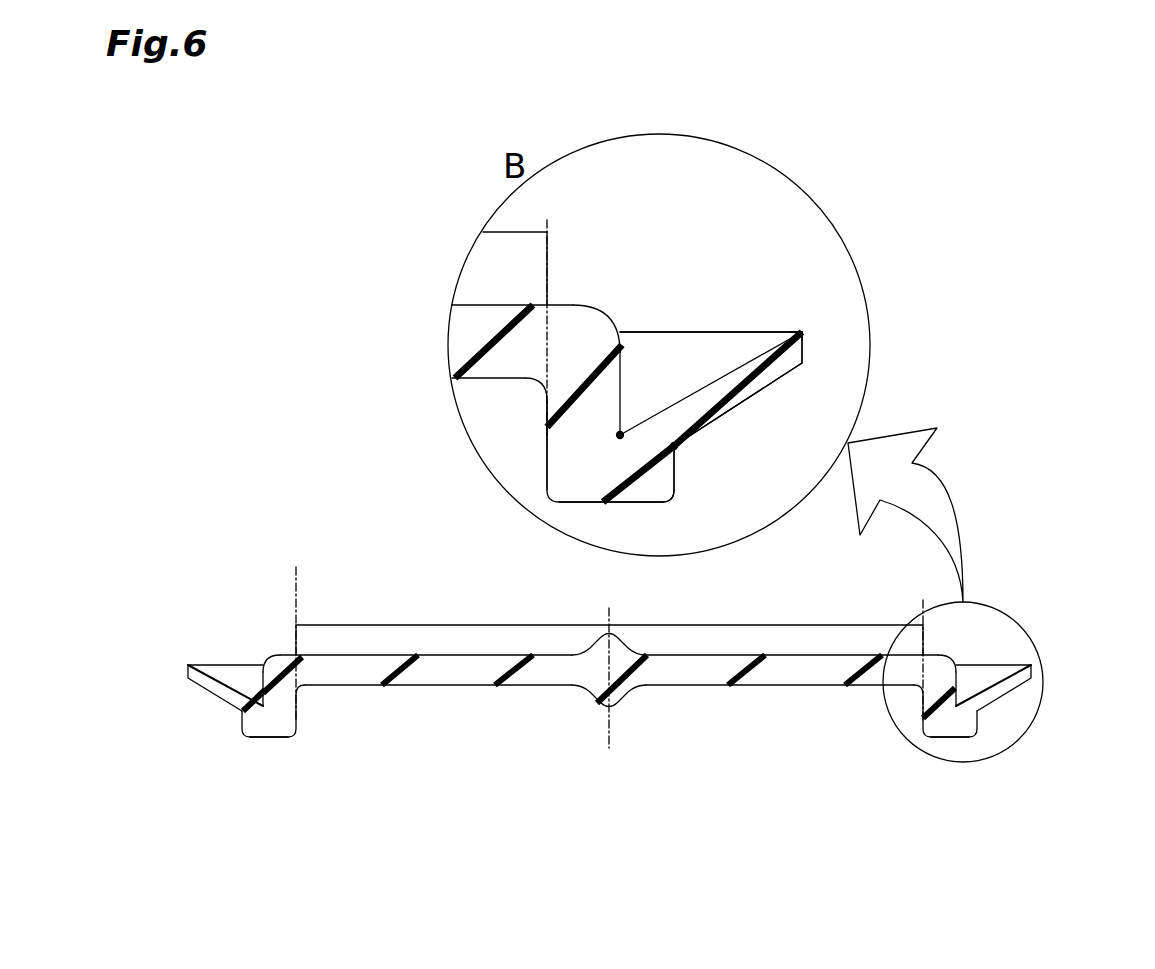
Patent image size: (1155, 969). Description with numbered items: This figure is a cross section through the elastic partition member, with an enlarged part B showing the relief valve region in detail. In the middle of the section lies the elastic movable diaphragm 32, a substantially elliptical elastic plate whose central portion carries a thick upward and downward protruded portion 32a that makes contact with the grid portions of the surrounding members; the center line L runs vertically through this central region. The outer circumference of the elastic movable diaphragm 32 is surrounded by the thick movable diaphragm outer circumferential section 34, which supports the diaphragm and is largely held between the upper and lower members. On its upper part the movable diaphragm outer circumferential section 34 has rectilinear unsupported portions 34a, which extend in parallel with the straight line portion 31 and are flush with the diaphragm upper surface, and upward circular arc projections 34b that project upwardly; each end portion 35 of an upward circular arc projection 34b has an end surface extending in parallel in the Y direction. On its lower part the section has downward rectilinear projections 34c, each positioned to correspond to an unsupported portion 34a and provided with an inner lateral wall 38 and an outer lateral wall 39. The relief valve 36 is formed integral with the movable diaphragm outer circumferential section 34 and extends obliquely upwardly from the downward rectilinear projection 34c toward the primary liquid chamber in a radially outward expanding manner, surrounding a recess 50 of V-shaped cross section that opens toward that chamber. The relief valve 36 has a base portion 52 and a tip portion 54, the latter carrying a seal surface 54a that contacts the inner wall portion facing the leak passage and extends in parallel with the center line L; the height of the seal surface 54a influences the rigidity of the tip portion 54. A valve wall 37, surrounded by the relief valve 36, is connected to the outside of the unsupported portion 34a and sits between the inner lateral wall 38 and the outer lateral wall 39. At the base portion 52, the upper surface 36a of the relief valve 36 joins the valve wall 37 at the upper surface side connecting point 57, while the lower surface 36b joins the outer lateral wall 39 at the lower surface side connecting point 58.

The straight line portion 31 is at (609, 457).
The elastic movable diaphragm 32 is at (452, 662).
The upward and downward protruded portion 32a is at (605, 638).
The movable diaphragm outer circumferential section 34 is at (300, 719).
The unsupported portion 34a is at (278, 653).
The upward circular arc projection 34b is at (388, 633).
The downward rectilinear projection 34c is at (253, 728).
The end portion 35 is at (293, 645).
The relief valve 36 is at (212, 697).
The upper surface of the relief valve 36a is at (748, 355).
The lower surface of the relief valve 36b is at (743, 403).
The valve wall 37 is at (258, 685).
The inner lateral wall 38 is at (547, 453).
The outer lateral wall 39 is at (677, 467).
The recess 50 is at (245, 670).
The base portion 52 is at (640, 477).
The tip portion 54 is at (797, 325).
The seal surface 54a is at (804, 347).
The upper surface side connecting point 57 is at (627, 433).
The lower surface side connecting point 58 is at (677, 447).
The center line L is at (609, 695).